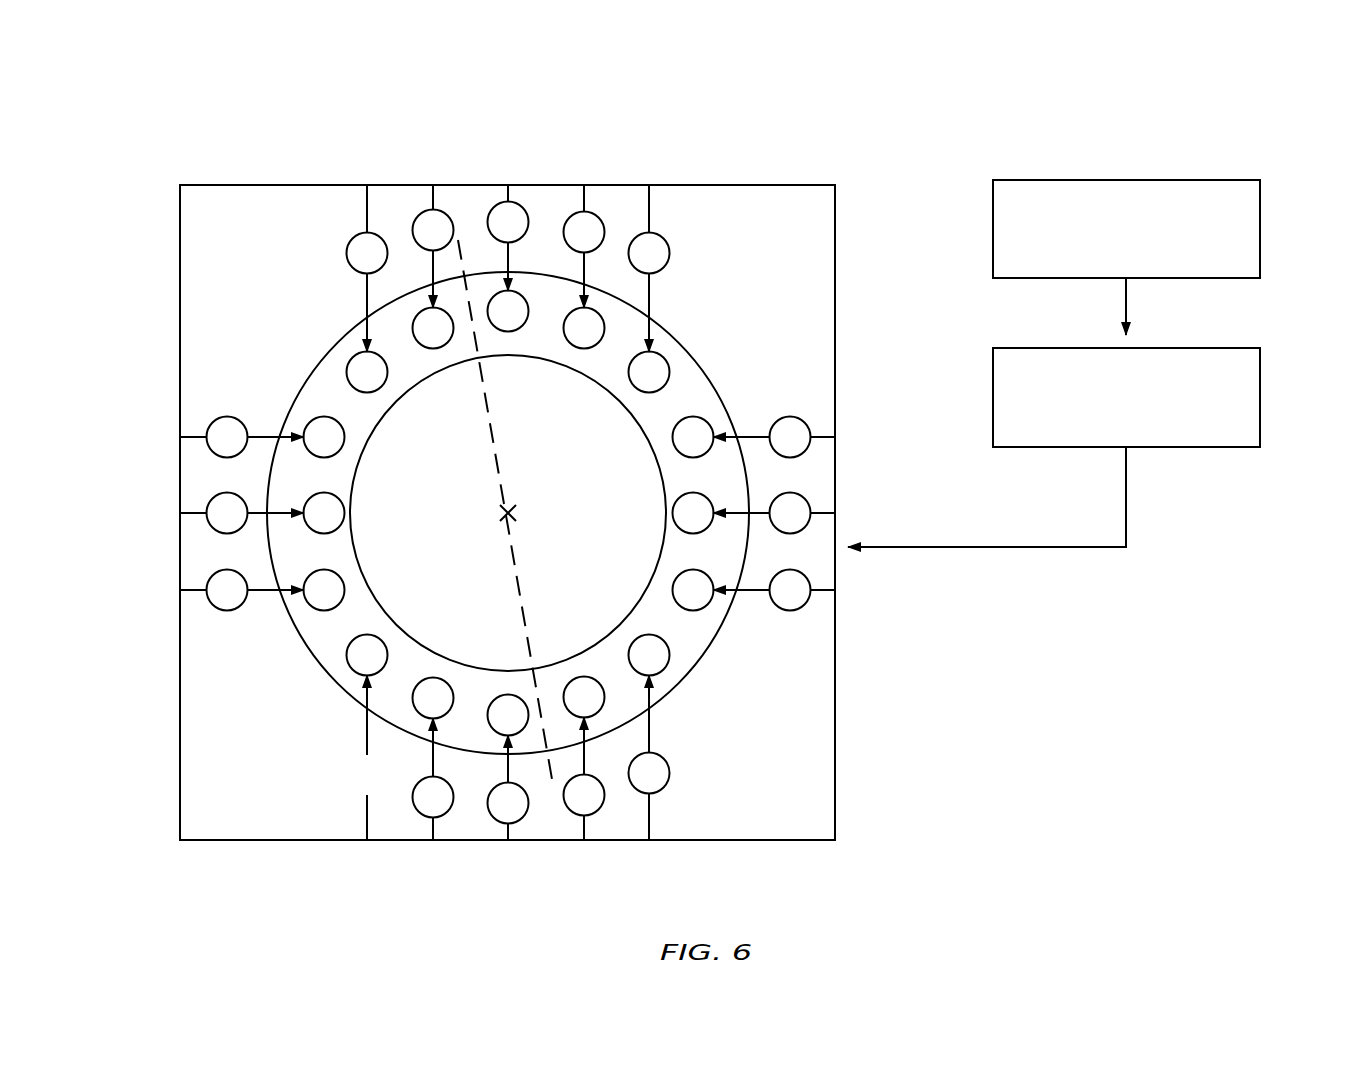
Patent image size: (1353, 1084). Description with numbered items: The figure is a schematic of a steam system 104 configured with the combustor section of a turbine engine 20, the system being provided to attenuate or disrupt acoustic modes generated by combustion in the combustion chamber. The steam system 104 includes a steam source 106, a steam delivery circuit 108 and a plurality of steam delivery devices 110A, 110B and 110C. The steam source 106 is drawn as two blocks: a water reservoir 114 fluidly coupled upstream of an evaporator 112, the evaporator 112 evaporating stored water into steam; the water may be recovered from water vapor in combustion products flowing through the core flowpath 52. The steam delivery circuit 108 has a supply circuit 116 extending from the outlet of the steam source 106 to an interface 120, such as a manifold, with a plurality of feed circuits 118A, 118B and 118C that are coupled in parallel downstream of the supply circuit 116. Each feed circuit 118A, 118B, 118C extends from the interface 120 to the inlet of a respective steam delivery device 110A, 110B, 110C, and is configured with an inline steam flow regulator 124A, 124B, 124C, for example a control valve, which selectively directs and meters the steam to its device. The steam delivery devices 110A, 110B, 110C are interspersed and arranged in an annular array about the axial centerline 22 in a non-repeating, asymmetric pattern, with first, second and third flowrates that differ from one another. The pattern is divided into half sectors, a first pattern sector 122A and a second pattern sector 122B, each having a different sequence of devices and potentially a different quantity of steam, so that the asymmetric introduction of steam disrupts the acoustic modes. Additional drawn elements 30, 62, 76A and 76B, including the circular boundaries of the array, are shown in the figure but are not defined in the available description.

The turbine engine 20 is at (163, 115).
The axial centerline 22 is at (503, 517).
The substrate 30 is at (715, 280).
The core flowpath 52 is at (338, 488).
The outer boundary 62 is at (702, 355).
The inner circular boundary 76A is at (373, 430).
The outer circular boundary 76B is at (312, 372).
The steam system 104 is at (1198, 120).
The steam source 106 is at (1275, 163).
The steam delivery circuit 108 is at (940, 665).
The first steam delivery device 110A is at (432, 348).
The second steam delivery device 110B is at (587, 350).
The third steam delivery device 110C is at (345, 437).
The evaporator 112 is at (1105, 427).
The water reservoir 114 is at (1105, 258).
The supply circuit 116 is at (1013, 548).
The first feed circuit 118A is at (433, 197).
The second feed circuit 118B is at (584, 195).
The third feed circuit 118C is at (367, 197).
The interface 120 is at (838, 775).
The first pattern sector 122A is at (307, 672).
The second pattern sector 122B is at (727, 388).
The first steam flow regulator 124A is at (226, 611).
The second steam flow regulator 124B is at (670, 773).
The third steam flow regulator 124C is at (347, 253).